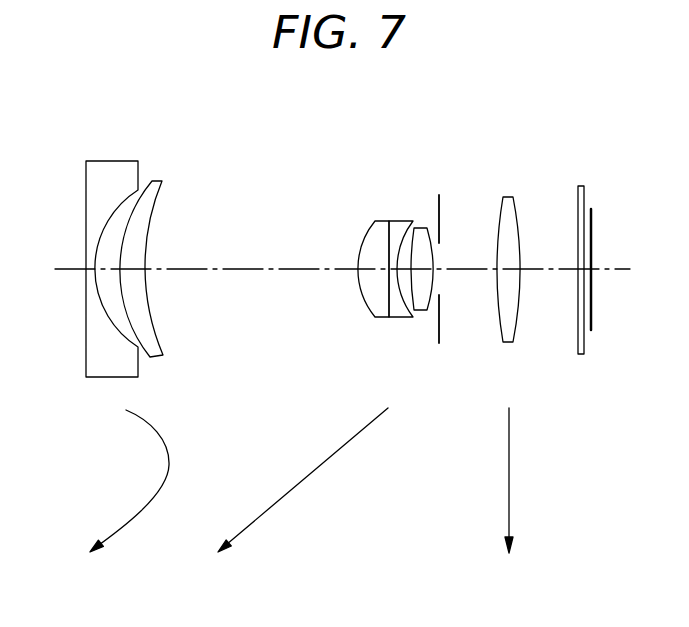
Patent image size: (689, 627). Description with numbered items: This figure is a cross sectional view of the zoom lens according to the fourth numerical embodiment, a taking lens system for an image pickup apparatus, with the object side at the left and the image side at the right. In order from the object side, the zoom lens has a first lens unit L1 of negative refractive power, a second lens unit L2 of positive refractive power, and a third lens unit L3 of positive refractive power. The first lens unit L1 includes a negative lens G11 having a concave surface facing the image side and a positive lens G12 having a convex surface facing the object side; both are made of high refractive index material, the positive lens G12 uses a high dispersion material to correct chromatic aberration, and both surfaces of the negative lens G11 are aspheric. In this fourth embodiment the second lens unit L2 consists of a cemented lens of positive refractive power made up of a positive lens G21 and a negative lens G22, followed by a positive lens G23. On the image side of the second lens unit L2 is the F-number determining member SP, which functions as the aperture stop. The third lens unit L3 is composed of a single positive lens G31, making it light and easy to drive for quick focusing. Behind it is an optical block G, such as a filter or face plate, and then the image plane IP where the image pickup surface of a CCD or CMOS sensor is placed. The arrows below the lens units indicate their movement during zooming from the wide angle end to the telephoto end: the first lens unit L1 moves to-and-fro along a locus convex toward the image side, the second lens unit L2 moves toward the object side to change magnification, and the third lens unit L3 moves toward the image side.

The first lens unit L1 is at (172, 130).
The second lens unit L2 is at (426, 129).
The third lens unit L3 is at (493, 129).
The optical block G is at (592, 129).
The negative lens G11 is at (95, 206).
The positive lens G12 is at (147, 218).
The positive lens G21 is at (367, 232).
The negative lens G22 is at (400, 228).
The positive lens G23 is at (425, 230).
The positive lens G31 is at (510, 200).
The F-number determining member SP is at (442, 220).
The image plane IP is at (593, 226).